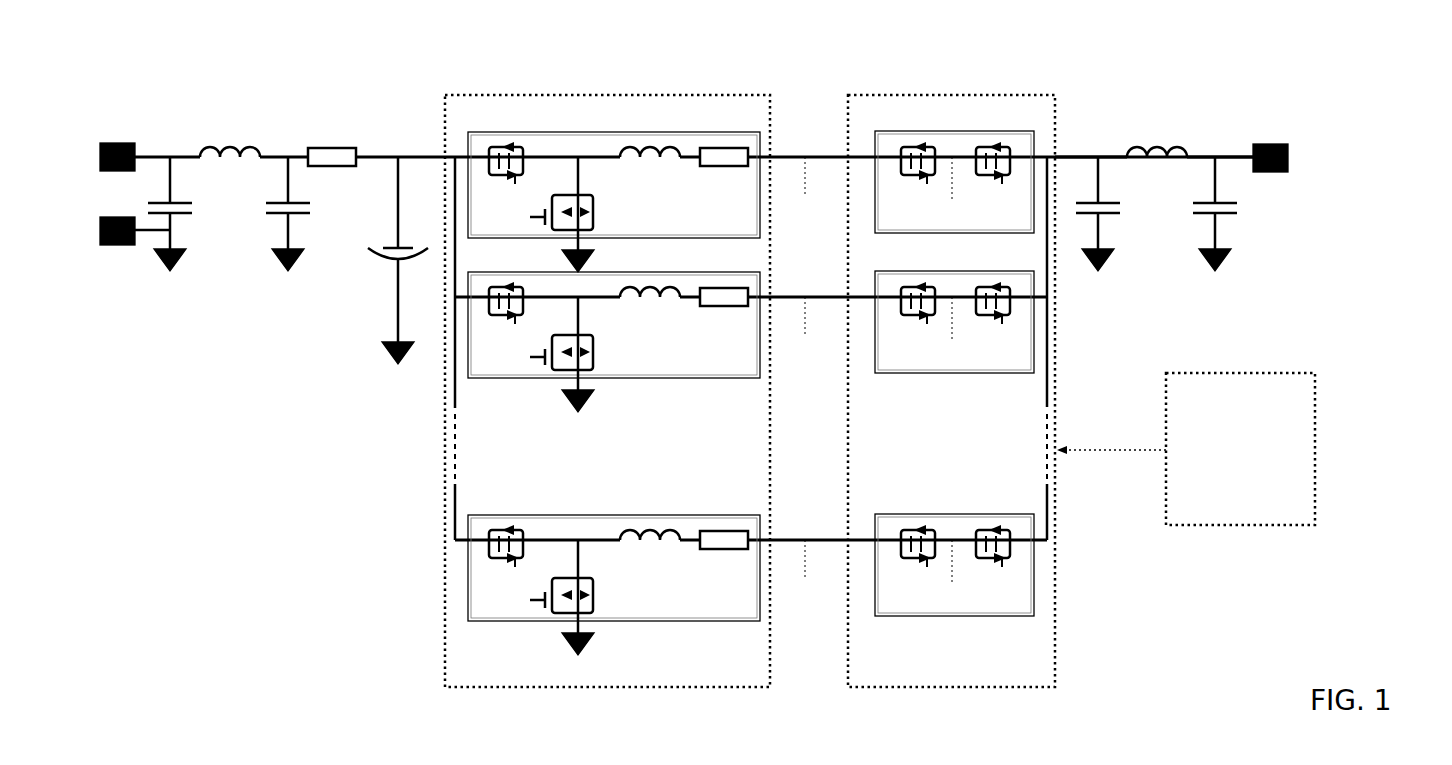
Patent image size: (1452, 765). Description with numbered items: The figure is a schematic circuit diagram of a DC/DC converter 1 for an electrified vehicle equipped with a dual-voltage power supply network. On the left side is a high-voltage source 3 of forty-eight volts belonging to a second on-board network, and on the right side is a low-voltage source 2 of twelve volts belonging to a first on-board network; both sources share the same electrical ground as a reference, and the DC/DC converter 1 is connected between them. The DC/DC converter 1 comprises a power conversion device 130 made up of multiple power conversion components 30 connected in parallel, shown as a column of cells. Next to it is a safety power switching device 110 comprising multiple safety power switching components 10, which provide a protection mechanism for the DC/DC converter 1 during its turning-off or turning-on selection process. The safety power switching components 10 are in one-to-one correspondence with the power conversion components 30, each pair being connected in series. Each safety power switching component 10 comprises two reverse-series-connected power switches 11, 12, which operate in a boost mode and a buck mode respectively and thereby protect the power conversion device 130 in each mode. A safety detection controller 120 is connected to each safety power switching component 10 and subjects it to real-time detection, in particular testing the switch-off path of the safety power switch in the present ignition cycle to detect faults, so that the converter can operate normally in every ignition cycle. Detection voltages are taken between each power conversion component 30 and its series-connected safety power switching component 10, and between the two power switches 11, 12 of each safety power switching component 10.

The DC/DC converter 1 is at (575, 80).
The low-voltage source 2 is at (1245, 87).
The high-voltage source 3 is at (130, 95).
The safety power switching component 10 is at (1017, 328).
The power switch 11 is at (903, 142).
The power switch 12 is at (1002, 142).
The power conversion component 30 is at (463, 138).
The safety power switching device 110 is at (996, 363).
The safety detection controller 120 is at (1316, 443).
The power conversion device 130 is at (547, 380).